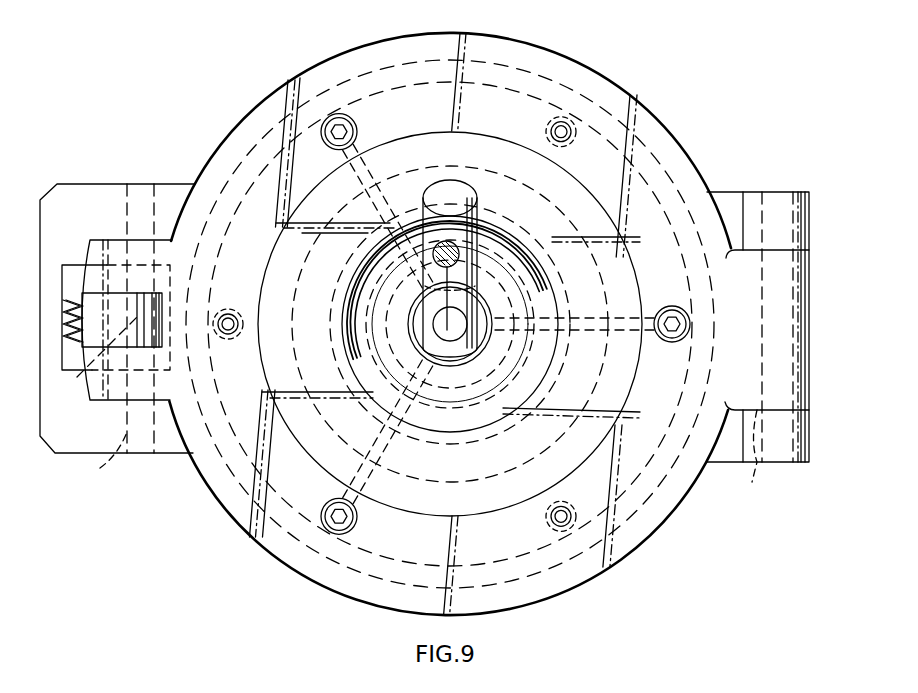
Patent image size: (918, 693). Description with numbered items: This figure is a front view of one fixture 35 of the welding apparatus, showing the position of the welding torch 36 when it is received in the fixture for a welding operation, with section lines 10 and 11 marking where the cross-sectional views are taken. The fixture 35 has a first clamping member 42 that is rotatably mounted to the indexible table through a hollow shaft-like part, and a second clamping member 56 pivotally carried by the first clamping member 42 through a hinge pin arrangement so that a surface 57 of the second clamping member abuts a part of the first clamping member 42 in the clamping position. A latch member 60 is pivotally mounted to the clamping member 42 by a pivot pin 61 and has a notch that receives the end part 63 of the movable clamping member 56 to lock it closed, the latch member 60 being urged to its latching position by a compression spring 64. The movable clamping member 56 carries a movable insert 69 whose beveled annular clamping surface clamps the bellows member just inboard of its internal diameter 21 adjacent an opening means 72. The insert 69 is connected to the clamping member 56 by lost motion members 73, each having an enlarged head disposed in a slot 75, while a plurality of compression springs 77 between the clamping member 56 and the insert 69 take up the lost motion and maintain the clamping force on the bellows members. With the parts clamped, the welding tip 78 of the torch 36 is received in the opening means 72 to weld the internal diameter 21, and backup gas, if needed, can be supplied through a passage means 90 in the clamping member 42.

The section line 10- 10 is at (17, 344).
The section line 11- 11 is at (307, 67).
The internal diameter 21 is at (420, 340).
The fixture 35 is at (634, 94).
The welding torch 36 is at (478, 246).
The first clamping member 42 is at (82, 200).
The second clamping member 56 is at (238, 147).
The surface 57 is at (758, 347).
The latch member 60 is at (90, 298).
The pivot pin 61 is at (100, 461).
The end part 63 is at (82, 373).
The compression spring 64 is at (80, 330).
The movable insert 69 is at (305, 270).
The opening means 72 is at (482, 318).
The lost motion member 73 is at (356, 125).
The slot 75 is at (333, 144).
The compression springs 77 is at (548, 125).
The welding tip 78 is at (470, 360).
The passage means 90 is at (375, 162).